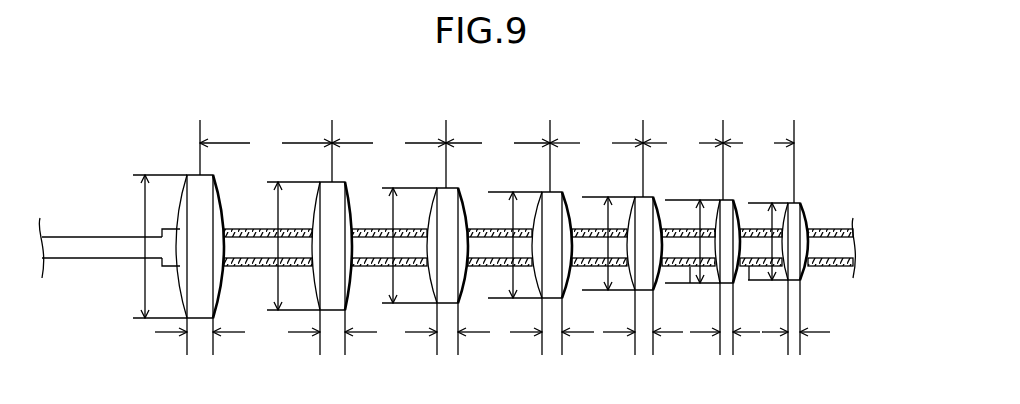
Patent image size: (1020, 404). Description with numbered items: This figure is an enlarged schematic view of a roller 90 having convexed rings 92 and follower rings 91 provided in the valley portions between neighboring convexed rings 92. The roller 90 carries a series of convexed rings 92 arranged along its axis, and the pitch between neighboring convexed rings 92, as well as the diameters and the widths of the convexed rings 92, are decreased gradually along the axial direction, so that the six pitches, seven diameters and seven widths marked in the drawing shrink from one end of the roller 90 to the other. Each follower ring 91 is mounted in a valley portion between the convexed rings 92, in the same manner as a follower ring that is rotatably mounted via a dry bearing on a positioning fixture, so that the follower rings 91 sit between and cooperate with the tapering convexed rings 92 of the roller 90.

The roller 90 is at (840, 119).
The follower ring 91 is at (690, 267).
The convexed ring 92 is at (730, 199).